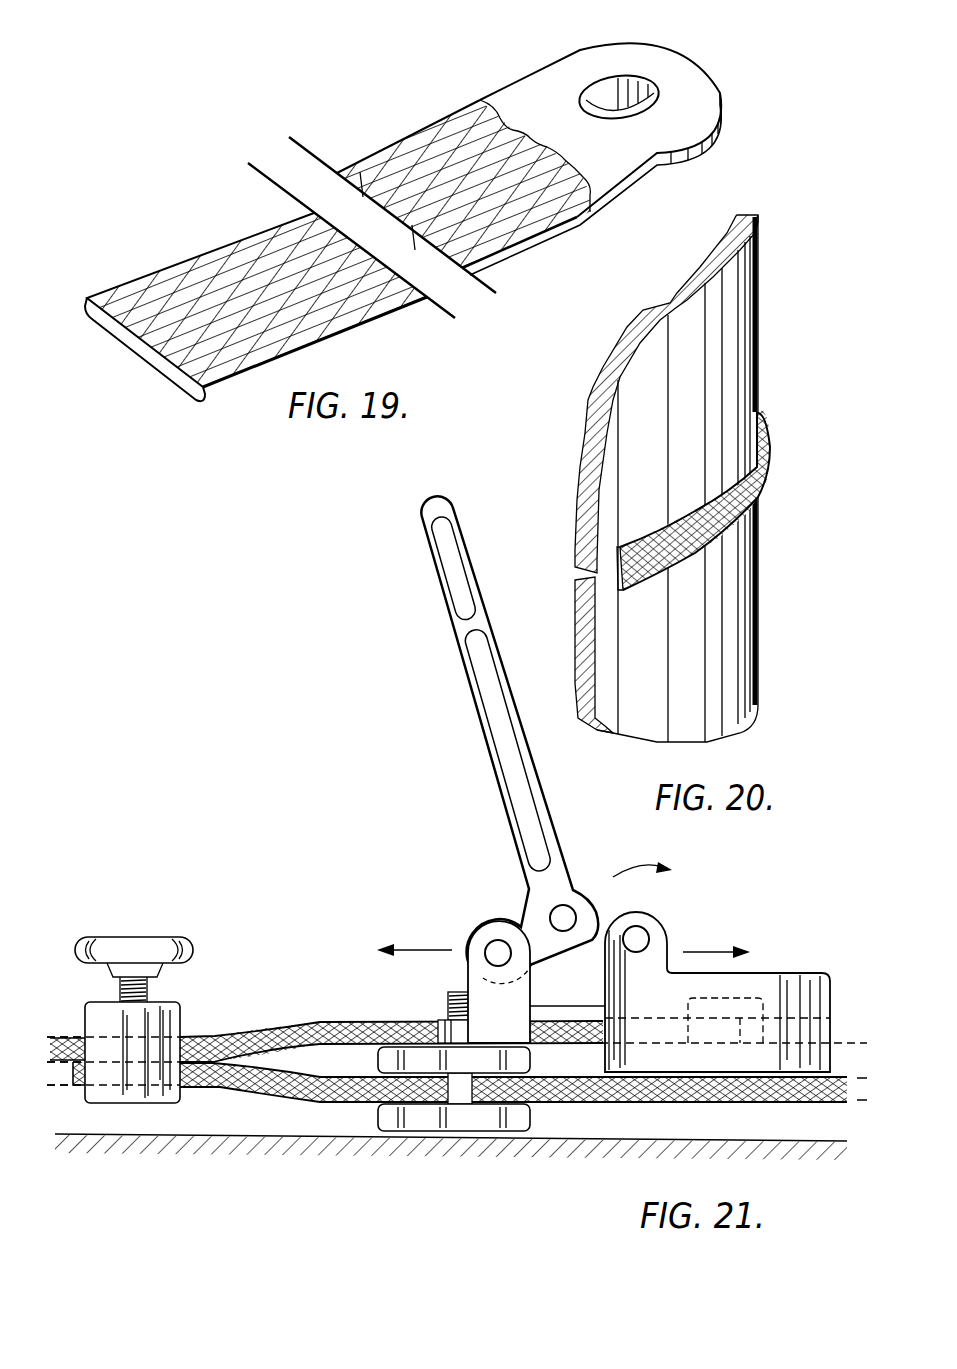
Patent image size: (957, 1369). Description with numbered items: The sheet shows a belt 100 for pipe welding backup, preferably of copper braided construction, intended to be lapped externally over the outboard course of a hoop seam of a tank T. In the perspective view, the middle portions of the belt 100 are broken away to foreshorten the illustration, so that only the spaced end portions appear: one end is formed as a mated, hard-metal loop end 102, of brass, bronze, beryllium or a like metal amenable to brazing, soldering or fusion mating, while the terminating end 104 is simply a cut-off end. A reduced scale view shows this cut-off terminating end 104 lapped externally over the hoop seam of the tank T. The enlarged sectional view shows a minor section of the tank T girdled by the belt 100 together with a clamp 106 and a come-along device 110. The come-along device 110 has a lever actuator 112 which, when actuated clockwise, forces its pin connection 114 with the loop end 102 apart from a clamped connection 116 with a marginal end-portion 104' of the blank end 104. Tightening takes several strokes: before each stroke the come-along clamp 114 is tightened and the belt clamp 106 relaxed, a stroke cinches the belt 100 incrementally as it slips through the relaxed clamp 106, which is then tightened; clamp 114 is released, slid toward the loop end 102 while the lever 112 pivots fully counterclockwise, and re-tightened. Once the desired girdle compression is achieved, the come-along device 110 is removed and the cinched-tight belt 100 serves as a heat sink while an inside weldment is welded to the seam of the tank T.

In FIG. 19, the belt 100 is at (130, 262).
In FIG. 20, the belt 100 is at (775, 403).
In FIG. 21, the belt 100 is at (290, 1004).
In FIG. 19, the loop end 102 is at (590, 56).
In FIG. 19, the terminating end 104 is at (338, 254).
In FIG. 20, the terminating end 104 is at (695, 531).
In FIG. 21, the terminating end 104 is at (448, 1077).
In FIG. 21, the marginal end-portion 104' is at (523, 1099).
In FIG. 21, the clamp 106 is at (182, 1003).
In FIG. 21, the come-along device 110 is at (457, 851).
In FIG. 21, the lever actuator 112 is at (487, 737).
In FIG. 21, the pin connection 114 is at (740, 998).
In FIG. 21, the clamped connection 116 is at (377, 1060).
In FIG. 20, the tank T is at (683, 299).
In FIG. 21, the tank T is at (187, 1133).